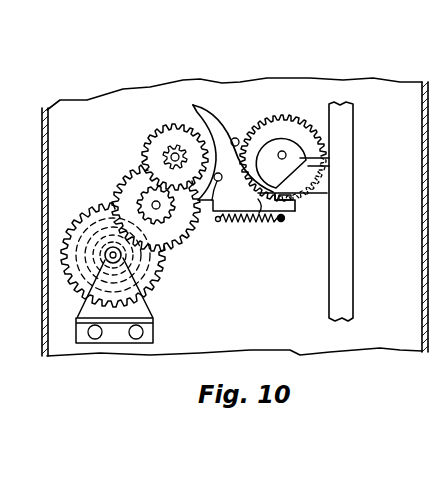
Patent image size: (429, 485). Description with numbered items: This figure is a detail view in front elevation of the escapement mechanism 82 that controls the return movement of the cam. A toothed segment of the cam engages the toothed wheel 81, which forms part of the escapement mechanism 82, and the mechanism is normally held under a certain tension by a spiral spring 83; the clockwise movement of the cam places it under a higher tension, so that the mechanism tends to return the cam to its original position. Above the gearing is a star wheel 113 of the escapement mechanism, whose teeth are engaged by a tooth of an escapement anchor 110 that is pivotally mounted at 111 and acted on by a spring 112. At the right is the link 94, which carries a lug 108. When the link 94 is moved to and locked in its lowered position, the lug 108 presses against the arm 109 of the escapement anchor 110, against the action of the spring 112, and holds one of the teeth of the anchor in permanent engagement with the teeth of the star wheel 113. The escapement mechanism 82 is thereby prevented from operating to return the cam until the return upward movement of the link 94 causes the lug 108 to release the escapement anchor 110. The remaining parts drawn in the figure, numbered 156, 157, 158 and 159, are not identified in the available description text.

The toothed wheel 81 is at (86, 268).
The escapement mechanism 82 is at (112, 187).
The spiral spring 83 is at (108, 288).
The link 94 is at (342, 182).
The lug 108 is at (316, 198).
The arm 109 is at (256, 222).
The escapement anchor 110 is at (207, 122).
The pivot 111 is at (201, 202).
The spring 112 is at (243, 225).
The star wheel 113 is at (166, 150).
The ratchet wheel 156 is at (297, 125).
The pawl disc 157 is at (272, 150).
The pivot pin 158 is at (238, 136).
The bar 159 is at (329, 158).